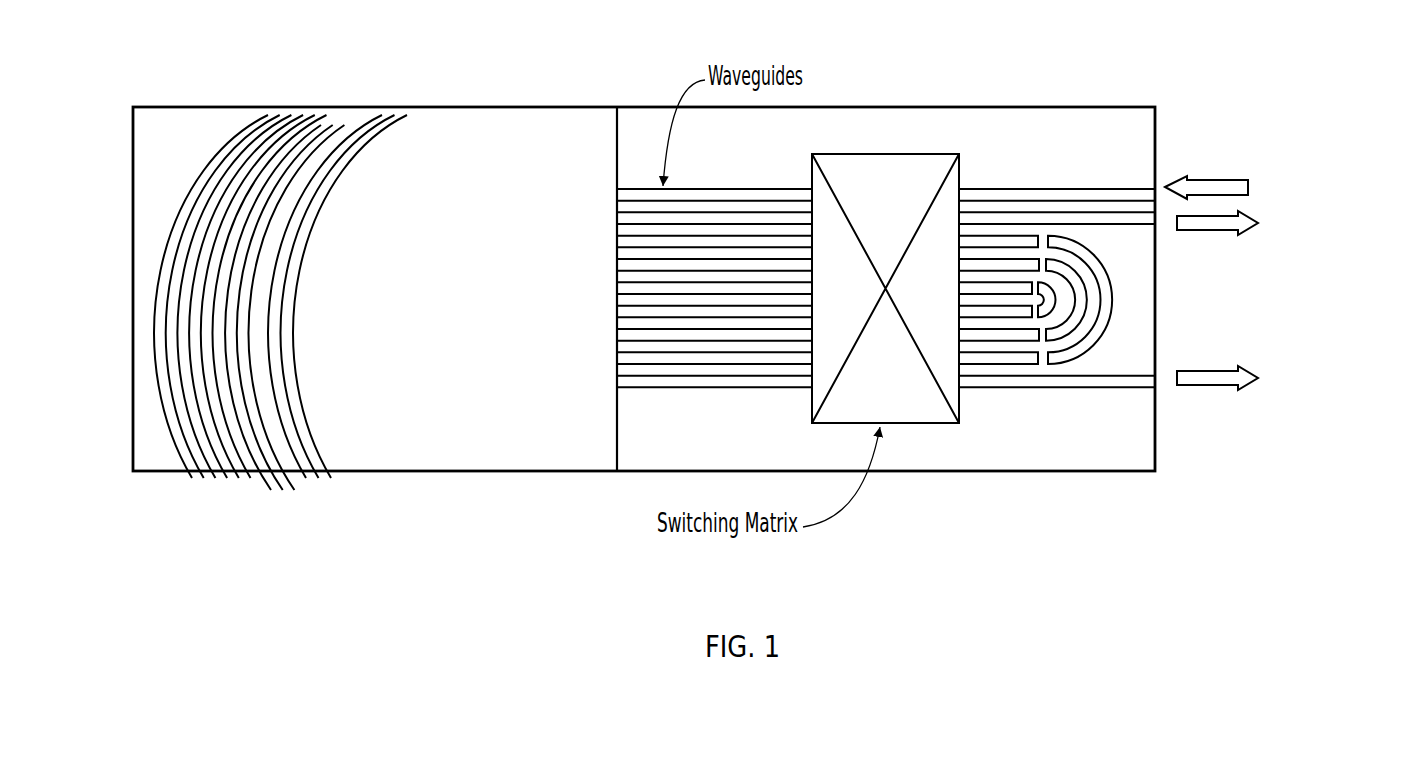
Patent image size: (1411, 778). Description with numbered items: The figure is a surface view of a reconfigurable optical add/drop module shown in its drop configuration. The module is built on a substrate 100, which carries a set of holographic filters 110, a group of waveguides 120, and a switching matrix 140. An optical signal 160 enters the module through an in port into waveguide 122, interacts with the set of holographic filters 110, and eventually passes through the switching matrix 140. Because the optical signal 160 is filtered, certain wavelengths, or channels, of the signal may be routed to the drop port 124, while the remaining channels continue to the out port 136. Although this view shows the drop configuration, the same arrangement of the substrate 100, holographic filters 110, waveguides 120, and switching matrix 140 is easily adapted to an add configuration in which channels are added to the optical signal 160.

The substrate 100 is at (125, 108).
The holographic filters 110 is at (422, 100).
The waveguides 120 is at (612, 176).
The waveguide 122 is at (1136, 184).
The drop port 124 is at (1203, 239).
The out port 136 is at (1203, 398).
The switching matrix 140 is at (910, 424).
The optical signal 160 is at (1248, 176).